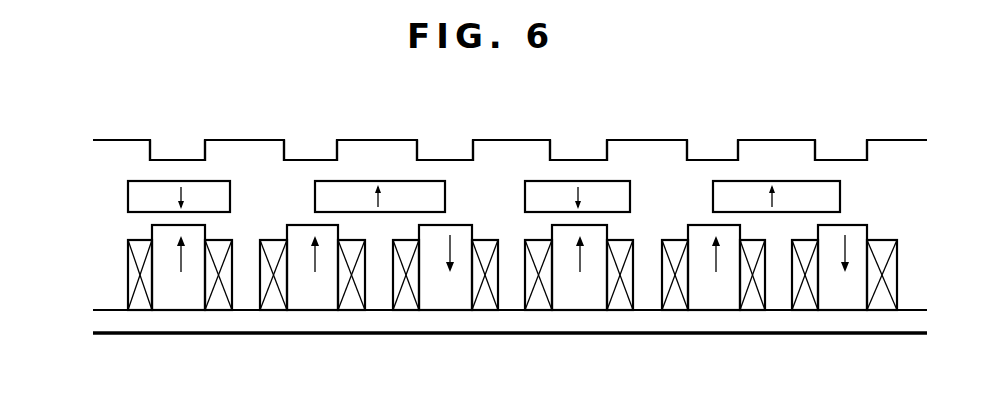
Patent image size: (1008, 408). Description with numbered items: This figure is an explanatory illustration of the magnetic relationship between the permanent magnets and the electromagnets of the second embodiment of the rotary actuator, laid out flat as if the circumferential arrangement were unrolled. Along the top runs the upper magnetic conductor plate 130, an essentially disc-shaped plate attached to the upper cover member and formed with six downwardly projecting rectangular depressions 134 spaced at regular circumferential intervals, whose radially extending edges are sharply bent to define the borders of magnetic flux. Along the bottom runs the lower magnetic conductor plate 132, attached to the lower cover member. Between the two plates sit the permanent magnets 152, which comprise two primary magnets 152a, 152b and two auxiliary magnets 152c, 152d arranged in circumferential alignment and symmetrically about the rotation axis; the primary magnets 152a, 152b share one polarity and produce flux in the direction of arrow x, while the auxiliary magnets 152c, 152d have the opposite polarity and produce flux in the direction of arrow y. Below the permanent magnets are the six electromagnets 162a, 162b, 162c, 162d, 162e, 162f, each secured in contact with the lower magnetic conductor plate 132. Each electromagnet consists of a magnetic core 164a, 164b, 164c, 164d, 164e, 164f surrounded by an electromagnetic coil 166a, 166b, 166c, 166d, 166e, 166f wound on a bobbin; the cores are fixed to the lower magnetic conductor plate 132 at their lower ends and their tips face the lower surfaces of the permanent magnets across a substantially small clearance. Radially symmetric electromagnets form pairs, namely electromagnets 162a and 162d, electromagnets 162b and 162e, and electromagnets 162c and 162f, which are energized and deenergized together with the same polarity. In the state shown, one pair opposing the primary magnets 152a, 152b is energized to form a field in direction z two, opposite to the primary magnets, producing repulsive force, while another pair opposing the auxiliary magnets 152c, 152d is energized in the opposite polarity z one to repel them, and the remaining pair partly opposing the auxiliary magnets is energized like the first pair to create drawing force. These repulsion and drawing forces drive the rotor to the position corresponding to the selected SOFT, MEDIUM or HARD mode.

The upper magnetic conductor plate 130 is at (122, 138).
The rectangular depressions 134 is at (185, 150).
The lower magnetic conductor plate 132 is at (850, 322).
The permanent magnets 152 is at (122, 202).
The primary magnet 152a is at (577, 196).
The primary magnet 152b is at (179, 196).
The auxiliary magnet 152c is at (380, 196).
The auxiliary magnet 152d is at (776, 196).
The magnetic core 164a is at (552, 231).
The magnetic core 164b is at (472, 225).
The magnetic core 164c is at (289, 225).
The magnetic core 164d is at (157, 238).
The magnetic core 164e is at (866, 225).
The magnetic core 164f is at (688, 225).
The electromagnetic coil 166a is at (579, 275).
The electromagnetic coil 166b is at (445, 275).
The electromagnetic coil 166c is at (312, 275).
The electromagnetic coil 166d is at (180, 275).
The electromagnetic coil 166e is at (844, 275).
The electromagnetic coil 166f is at (713, 275).
The electromagnet 162a is at (567, 324).
The electromagnet 162b is at (445, 324).
The electromagnet 162c is at (310, 324).
The electromagnet 162d is at (178, 324).
The electromagnet 162e is at (826, 324).
The electromagnet 162f is at (710, 324).